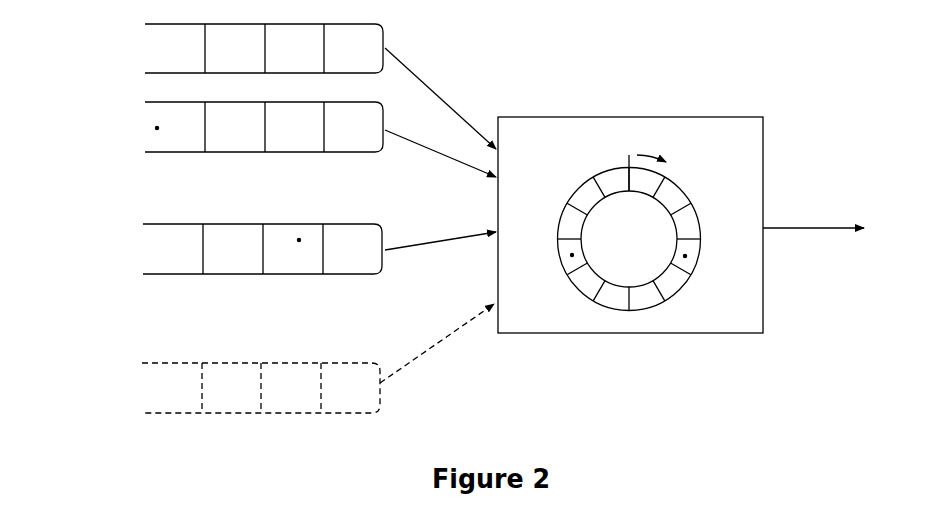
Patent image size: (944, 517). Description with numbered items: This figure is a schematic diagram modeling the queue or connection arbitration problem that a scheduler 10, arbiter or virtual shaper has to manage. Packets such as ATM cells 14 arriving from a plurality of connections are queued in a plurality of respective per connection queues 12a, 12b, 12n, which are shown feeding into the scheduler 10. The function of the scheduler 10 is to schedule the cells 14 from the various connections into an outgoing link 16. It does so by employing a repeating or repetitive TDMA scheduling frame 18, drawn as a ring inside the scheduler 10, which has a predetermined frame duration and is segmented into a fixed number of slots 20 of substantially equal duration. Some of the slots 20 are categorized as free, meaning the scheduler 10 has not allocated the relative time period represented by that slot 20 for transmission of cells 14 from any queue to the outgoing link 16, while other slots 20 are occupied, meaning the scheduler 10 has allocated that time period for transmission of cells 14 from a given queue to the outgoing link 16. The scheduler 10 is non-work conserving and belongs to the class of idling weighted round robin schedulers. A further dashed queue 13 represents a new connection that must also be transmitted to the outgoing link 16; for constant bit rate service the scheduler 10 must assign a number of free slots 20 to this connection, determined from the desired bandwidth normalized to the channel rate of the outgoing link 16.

The scheduler 10 is at (683, 116).
The per connection queue 12a is at (377, 43).
The per connection queue 12b is at (383, 112).
The per connection queue 12n is at (384, 234).
The queue 13 is at (376, 412).
The ATM cells 14 is at (157, 128).
The outgoing link 16 is at (812, 227).
The scheduling frame 18 is at (567, 190).
The slots 20 is at (572, 255).